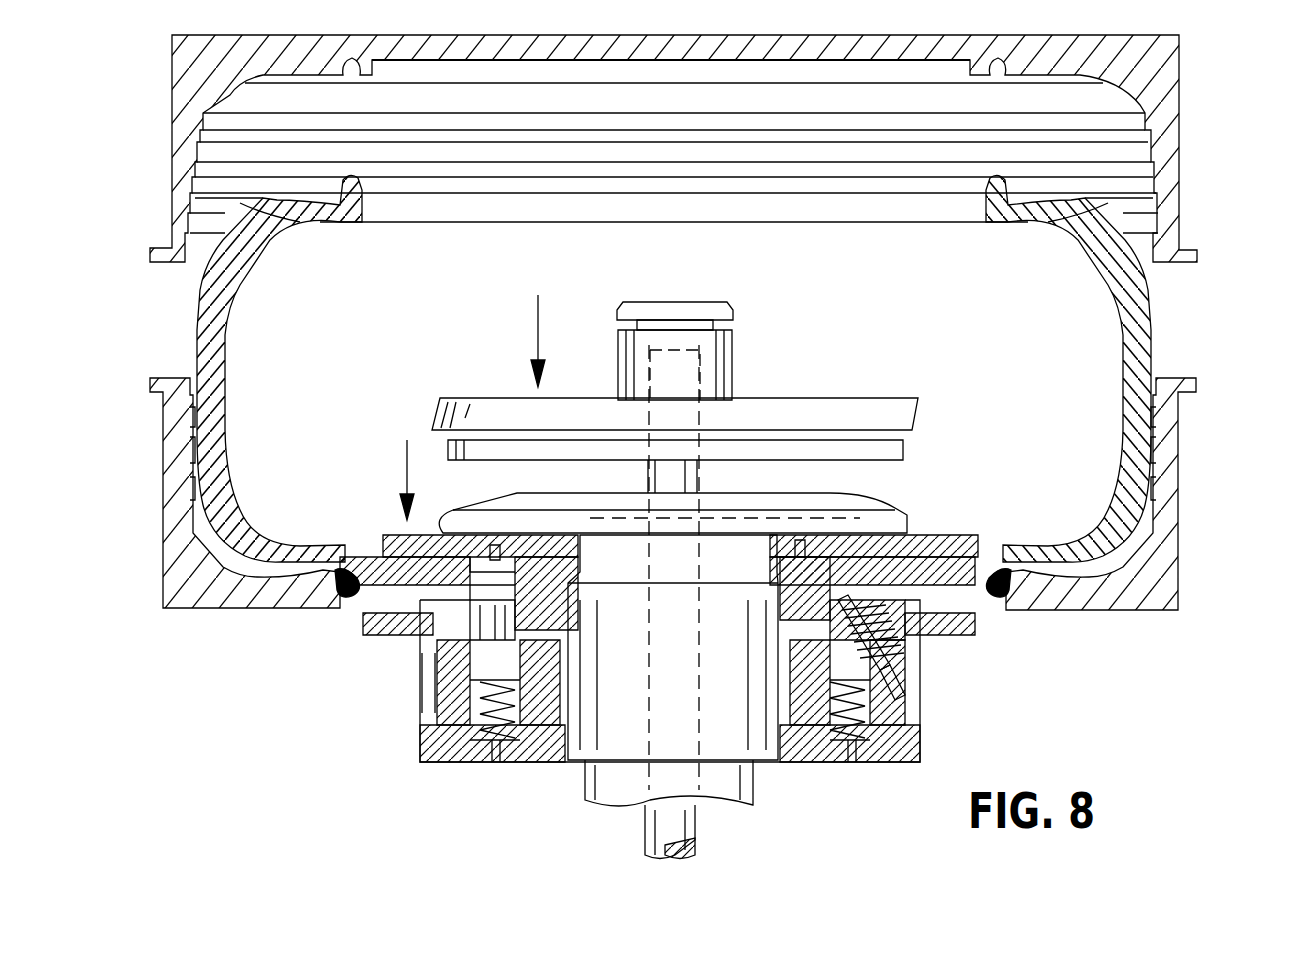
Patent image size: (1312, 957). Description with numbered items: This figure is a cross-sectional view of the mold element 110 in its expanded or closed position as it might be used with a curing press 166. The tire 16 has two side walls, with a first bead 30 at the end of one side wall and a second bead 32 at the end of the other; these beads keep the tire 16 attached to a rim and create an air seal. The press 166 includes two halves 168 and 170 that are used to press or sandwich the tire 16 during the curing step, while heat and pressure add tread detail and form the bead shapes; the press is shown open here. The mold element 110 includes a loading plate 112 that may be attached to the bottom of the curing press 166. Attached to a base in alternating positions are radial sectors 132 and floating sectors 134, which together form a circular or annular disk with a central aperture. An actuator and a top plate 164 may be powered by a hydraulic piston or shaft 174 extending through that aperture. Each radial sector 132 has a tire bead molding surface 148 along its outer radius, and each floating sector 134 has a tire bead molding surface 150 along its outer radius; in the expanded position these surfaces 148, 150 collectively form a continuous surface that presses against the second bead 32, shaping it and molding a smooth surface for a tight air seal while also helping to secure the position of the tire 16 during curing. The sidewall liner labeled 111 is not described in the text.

The tire 16 is at (1135, 285).
The first bead 30 is at (340, 205).
The second bead 32 is at (340, 612).
The mold element 110 is at (710, 542).
The inner liner 111 is at (268, 208).
The loading plate 112 is at (985, 620).
The radial sector 132 is at (385, 540).
The floating sector 134 is at (950, 540).
The tire bead molding surface 148 is at (338, 578).
The tire bead molding surface 150 is at (1000, 570).
The top plate 164 is at (933, 540).
The curing press 166 is at (729, 267).
The press half 168 is at (1158, 105).
The press half 170 is at (1157, 490).
The hydraulic piston or shaft 174 is at (684, 470).